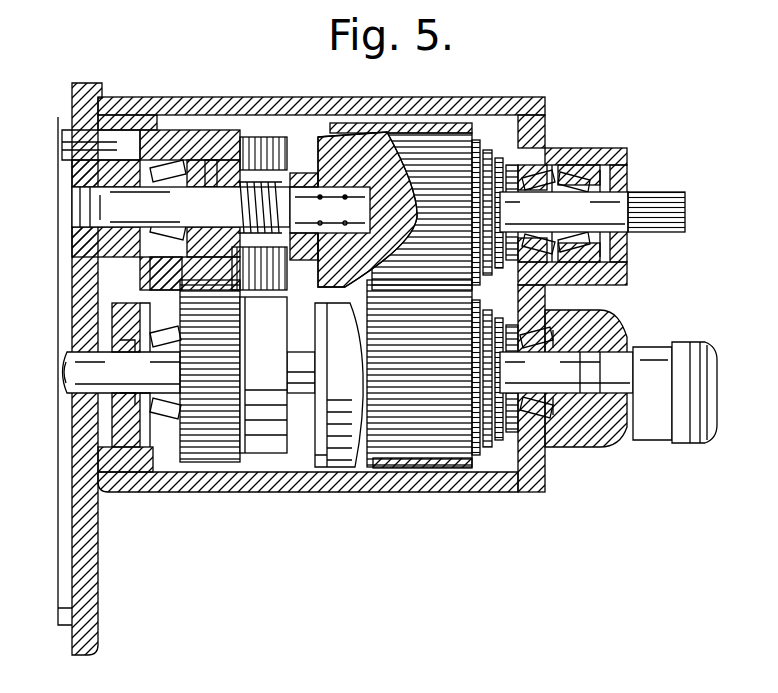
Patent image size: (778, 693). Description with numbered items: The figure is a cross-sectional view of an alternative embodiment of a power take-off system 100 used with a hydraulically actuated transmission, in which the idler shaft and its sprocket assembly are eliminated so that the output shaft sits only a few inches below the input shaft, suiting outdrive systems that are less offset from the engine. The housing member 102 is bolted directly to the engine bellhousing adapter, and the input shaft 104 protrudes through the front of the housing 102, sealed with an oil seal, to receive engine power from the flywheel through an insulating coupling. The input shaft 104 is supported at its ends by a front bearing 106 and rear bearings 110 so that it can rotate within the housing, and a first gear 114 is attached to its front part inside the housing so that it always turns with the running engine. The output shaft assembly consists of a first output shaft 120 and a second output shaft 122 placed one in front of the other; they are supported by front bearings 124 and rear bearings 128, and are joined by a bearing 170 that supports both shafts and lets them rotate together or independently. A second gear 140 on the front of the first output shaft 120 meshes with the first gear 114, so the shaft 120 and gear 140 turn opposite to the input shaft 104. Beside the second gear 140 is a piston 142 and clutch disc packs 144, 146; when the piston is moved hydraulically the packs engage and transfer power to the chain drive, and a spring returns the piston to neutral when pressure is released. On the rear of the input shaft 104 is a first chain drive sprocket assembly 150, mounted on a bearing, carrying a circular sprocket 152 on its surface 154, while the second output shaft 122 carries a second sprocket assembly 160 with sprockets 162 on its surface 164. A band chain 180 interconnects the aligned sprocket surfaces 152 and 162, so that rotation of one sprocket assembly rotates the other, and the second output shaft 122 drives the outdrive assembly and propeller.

The power take-off system 100 is at (546, 90).
The housing member 102 is at (315, 482).
The input shaft 104 is at (136, 378).
The front bearing 106 is at (157, 440).
The rear bearings 110 is at (543, 423).
The first gear 114 is at (232, 366).
The first output shaft 120 is at (199, 215).
The second output shaft 122 is at (576, 215).
The front bearings 124 is at (177, 165).
The rear bearings 128 is at (597, 148).
The second gear 140 is at (219, 157).
The piston 142 is at (282, 128).
The clutch disc pack 144 is at (228, 160).
The clutch disc pack 146 is at (183, 257).
The first chain drive sprocket assembly 150 is at (440, 388).
The sprocket 152 is at (470, 463).
The surface 154 is at (407, 450).
The second sprocket assembly 160 is at (448, 266).
The sprockets 162 is at (423, 150).
The surface 164 is at (500, 121).
The bearing 170 is at (350, 207).
The band chain 180 is at (337, 403).